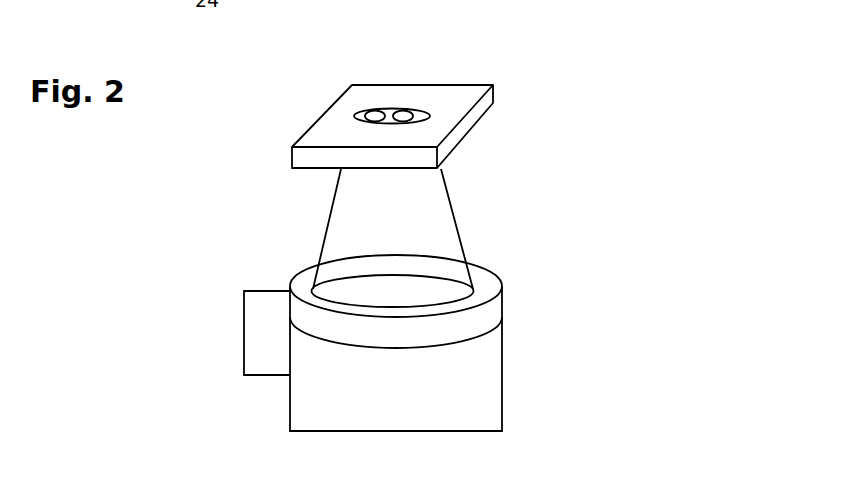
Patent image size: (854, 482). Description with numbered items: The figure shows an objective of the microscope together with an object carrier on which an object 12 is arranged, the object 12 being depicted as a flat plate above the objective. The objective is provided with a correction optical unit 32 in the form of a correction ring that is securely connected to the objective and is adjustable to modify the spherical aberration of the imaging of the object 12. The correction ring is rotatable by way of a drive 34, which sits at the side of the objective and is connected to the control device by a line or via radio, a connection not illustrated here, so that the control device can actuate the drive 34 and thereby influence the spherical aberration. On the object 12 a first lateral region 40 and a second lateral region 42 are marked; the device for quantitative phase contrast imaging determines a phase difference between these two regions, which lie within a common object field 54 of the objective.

The object 12 is at (470, 133).
The correction optical unit 32 is at (487, 320).
The drive 34 is at (256, 313).
The first lateral region 40 is at (368, 112).
The second lateral region 42 is at (406, 112).
The object field 54 is at (423, 110).